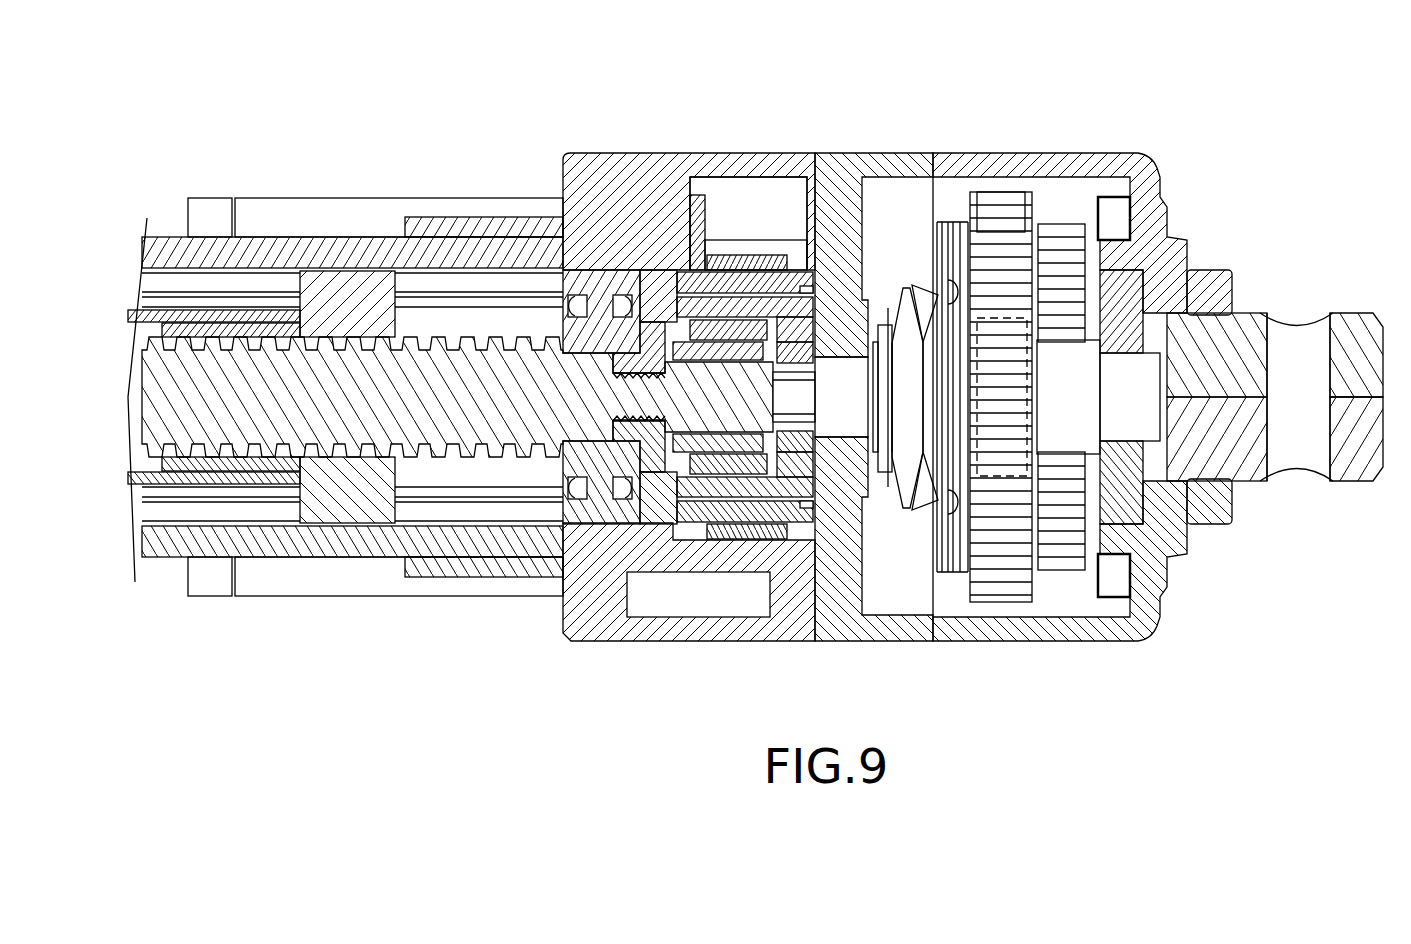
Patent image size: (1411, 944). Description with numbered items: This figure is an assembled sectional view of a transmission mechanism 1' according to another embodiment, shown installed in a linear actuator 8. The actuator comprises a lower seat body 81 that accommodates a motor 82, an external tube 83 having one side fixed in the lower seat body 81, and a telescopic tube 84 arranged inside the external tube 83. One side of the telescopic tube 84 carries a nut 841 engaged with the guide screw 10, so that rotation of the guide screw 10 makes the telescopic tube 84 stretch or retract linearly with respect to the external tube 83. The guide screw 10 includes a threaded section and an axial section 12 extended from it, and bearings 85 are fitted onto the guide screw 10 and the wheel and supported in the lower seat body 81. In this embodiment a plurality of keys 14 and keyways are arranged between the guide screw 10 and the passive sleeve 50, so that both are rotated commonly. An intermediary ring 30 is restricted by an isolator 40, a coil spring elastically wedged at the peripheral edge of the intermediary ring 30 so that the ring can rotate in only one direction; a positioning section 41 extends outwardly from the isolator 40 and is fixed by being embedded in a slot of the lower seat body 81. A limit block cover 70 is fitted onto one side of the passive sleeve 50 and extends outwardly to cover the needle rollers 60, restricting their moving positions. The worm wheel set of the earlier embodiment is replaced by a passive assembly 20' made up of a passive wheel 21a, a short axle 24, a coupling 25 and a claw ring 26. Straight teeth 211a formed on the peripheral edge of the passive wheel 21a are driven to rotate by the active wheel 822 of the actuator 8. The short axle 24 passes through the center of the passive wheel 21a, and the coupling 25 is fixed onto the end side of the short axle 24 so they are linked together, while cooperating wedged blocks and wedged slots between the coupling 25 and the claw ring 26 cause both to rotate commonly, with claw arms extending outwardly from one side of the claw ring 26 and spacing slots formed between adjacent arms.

The linear actuator 8 is at (686, 29).
The external tube 83 is at (257, 250).
The motor 82 is at (328, 215).
The nut 841 is at (337, 500).
The telescopic tube 84 is at (213, 482).
The guide screw 10 is at (503, 458).
The keys 14 is at (668, 312).
The axial section 12 is at (585, 350).
The bearings 85 is at (587, 525).
The positioning section 41 is at (690, 218).
The transmission mechanism 1' is at (740, 169).
The isolator 40 is at (738, 240).
The passive sleeve 50 is at (745, 540).
The intermediary ring 30 is at (760, 272).
The needle rollers 60 is at (705, 498).
The limit block cover 70 is at (676, 474).
The claw ring 26 is at (797, 470).
The short axle 24 is at (840, 385).
The coupling 25 is at (820, 440).
The passive assembly 20' is at (982, 319).
The straight teeth 211a is at (1003, 215).
The active wheel 822 is at (1006, 478).
The passive wheel 21a is at (1040, 255).
The lower seat body 81 is at (1141, 160).